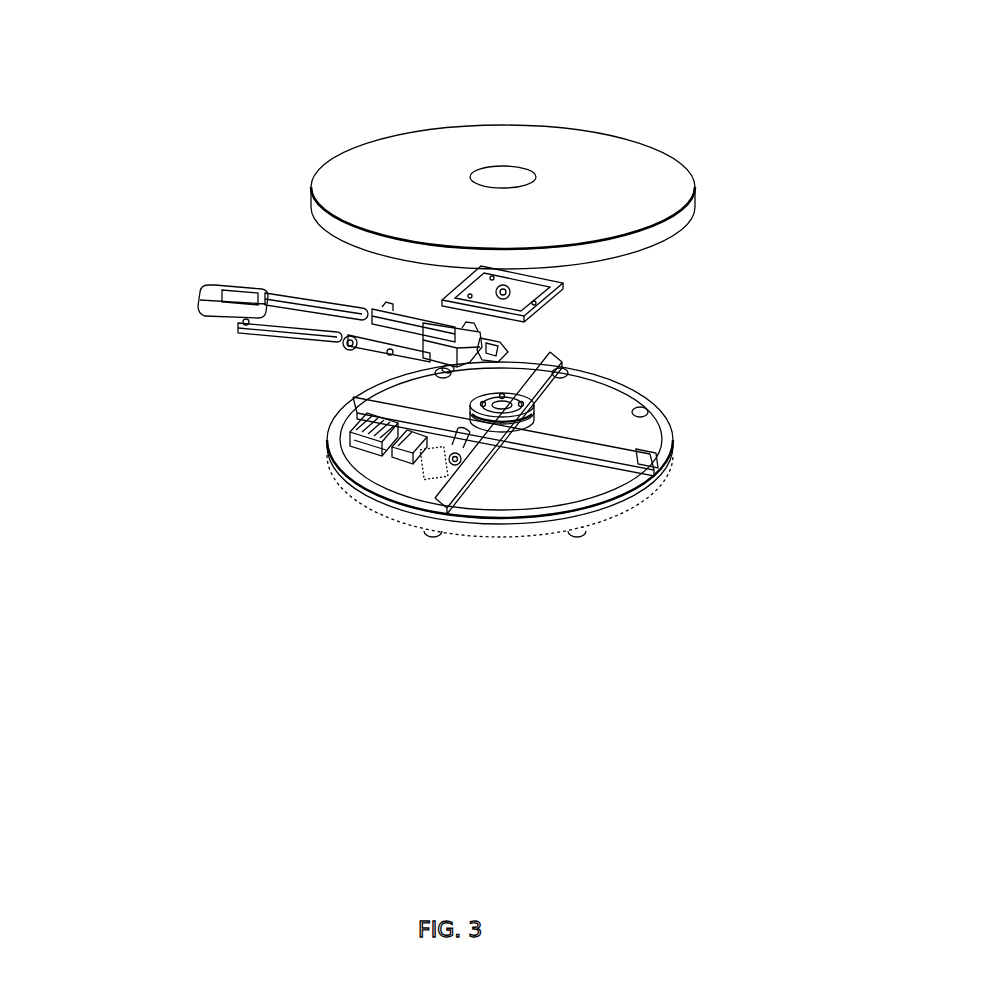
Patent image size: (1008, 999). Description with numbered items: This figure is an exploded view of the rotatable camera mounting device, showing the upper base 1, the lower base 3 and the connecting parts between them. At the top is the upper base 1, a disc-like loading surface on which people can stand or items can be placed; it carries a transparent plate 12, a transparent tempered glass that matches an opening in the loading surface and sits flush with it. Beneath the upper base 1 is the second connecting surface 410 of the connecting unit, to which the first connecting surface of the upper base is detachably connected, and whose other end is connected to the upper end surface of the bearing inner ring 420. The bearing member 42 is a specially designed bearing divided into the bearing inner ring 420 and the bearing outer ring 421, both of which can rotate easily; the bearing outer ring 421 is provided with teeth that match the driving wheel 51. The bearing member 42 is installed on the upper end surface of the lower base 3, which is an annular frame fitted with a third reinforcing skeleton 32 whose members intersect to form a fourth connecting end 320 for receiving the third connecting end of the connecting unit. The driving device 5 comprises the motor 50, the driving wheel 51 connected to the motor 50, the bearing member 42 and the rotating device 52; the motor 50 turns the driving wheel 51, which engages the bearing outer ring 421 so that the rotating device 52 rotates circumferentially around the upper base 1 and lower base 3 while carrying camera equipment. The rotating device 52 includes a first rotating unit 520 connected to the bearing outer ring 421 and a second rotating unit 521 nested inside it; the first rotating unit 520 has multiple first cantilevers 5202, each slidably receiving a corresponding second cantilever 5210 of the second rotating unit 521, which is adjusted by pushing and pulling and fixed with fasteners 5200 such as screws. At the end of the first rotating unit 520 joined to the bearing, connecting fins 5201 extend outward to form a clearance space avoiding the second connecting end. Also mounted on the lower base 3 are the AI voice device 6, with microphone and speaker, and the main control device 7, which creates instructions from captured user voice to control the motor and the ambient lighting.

The upper base 1 is at (303, 185).
The transparent plate 12 is at (537, 177).
The lower base 3 is at (365, 515).
The third reinforcing skeleton 32 is at (663, 433).
The fourth connecting end 320 is at (640, 470).
The second connecting surface 410 is at (560, 283).
The bearing member 42 is at (776, 655).
The bearing inner ring 420 is at (522, 402).
The bearing outer ring 421 is at (526, 424).
The driving device 5 is at (522, 800).
The motor 50 is at (480, 443).
The driving wheel 51 is at (645, 500).
The rotating device 52 is at (379, 552).
The first rotating unit 520 is at (422, 309).
The fasteners 5200 is at (348, 357).
The connecting fins 5201 is at (500, 344).
The first cantilevers 5202 is at (452, 347).
The second rotating unit 521 is at (340, 328).
The second cantilevers 5210 is at (193, 343).
The AI voice device 6 is at (352, 432).
The main control device 7 is at (392, 458).